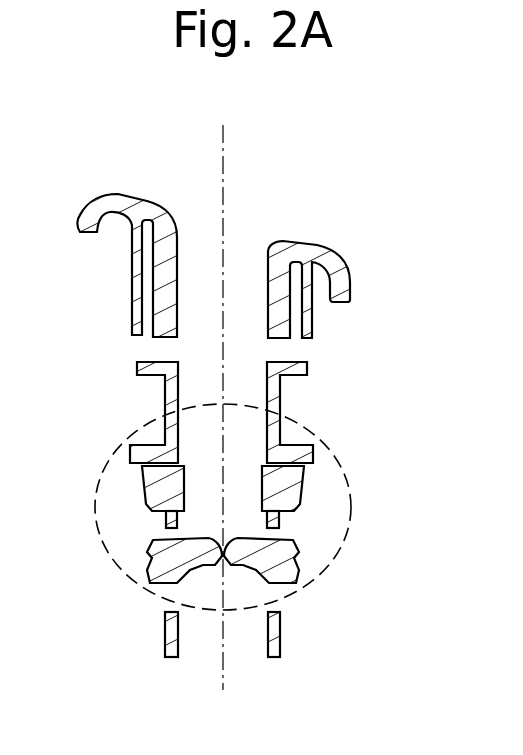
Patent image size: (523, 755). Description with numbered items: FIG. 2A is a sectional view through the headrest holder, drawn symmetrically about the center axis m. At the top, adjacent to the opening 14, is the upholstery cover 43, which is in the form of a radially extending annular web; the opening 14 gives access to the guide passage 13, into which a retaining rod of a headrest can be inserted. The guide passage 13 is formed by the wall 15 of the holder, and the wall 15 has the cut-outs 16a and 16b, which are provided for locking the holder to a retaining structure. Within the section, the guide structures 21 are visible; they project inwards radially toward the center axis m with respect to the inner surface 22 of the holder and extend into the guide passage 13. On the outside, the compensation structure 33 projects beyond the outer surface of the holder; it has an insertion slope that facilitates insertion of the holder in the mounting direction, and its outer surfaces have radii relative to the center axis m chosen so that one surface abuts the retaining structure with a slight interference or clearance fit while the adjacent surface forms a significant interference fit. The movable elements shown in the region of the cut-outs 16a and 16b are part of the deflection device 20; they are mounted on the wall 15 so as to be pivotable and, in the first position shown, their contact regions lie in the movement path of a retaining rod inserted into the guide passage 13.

The center axis m is at (222, 143).
The upholstery cover 43 is at (134, 183).
The opening 14 is at (240, 255).
The guide passage 13 is at (228, 388).
The compensation structure 33 is at (128, 485).
The guide structures 21 is at (177, 492).
The cut-out 16a is at (158, 592).
The cut-out 16b is at (277, 593).
The wall 15 is at (165, 640).
The inner surface 22 is at (268, 622).
The deflection device 20 is at (206, 587).